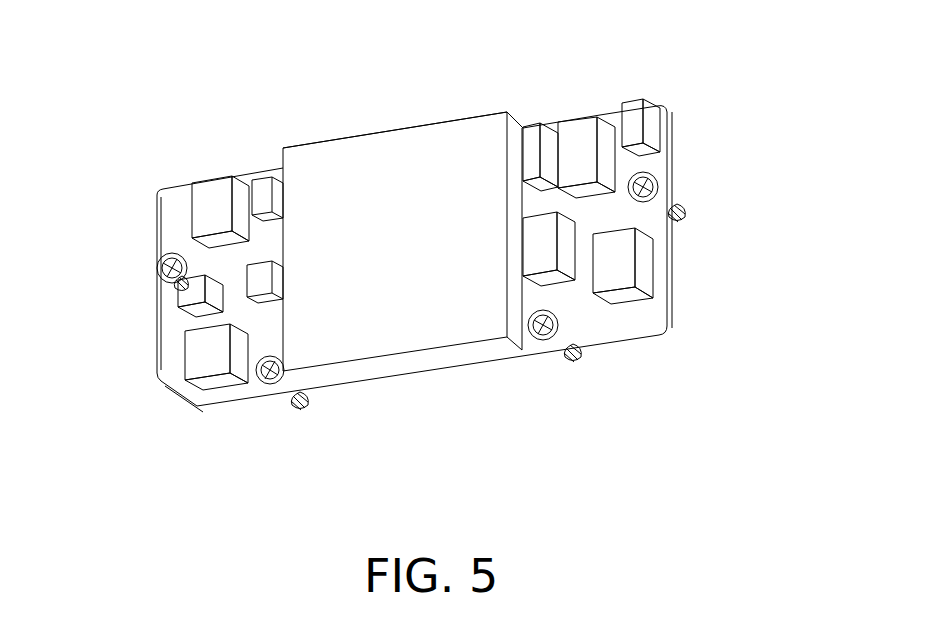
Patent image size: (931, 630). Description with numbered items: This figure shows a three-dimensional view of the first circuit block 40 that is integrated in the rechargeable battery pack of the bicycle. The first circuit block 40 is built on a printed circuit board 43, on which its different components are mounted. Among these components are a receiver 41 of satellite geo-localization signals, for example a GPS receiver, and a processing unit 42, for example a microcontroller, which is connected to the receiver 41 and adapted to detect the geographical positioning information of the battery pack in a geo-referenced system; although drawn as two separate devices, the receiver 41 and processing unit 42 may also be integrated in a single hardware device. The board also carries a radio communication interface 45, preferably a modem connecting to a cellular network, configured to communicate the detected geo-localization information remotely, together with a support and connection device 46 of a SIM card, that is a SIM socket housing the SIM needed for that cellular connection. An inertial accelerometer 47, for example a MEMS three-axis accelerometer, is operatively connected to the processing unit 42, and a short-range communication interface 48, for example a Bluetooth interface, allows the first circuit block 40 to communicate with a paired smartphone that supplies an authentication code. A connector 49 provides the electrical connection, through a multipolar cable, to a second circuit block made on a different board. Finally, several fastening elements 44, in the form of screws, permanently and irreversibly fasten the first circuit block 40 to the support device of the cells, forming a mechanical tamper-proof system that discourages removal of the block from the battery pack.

The first circuit block 40 is at (397, 79).
The receiver 41 is at (215, 188).
The processing unit 42 is at (310, 155).
The printed circuit board 43 is at (672, 302).
The fastening element 44 is at (167, 273).
The radio communication interface 45 is at (586, 130).
The support and connection device of a SIM card 46 is at (257, 280).
The inertial accelerometer 47 is at (257, 193).
The short-range communication interface 48 is at (197, 358).
The connector 49 is at (638, 252).